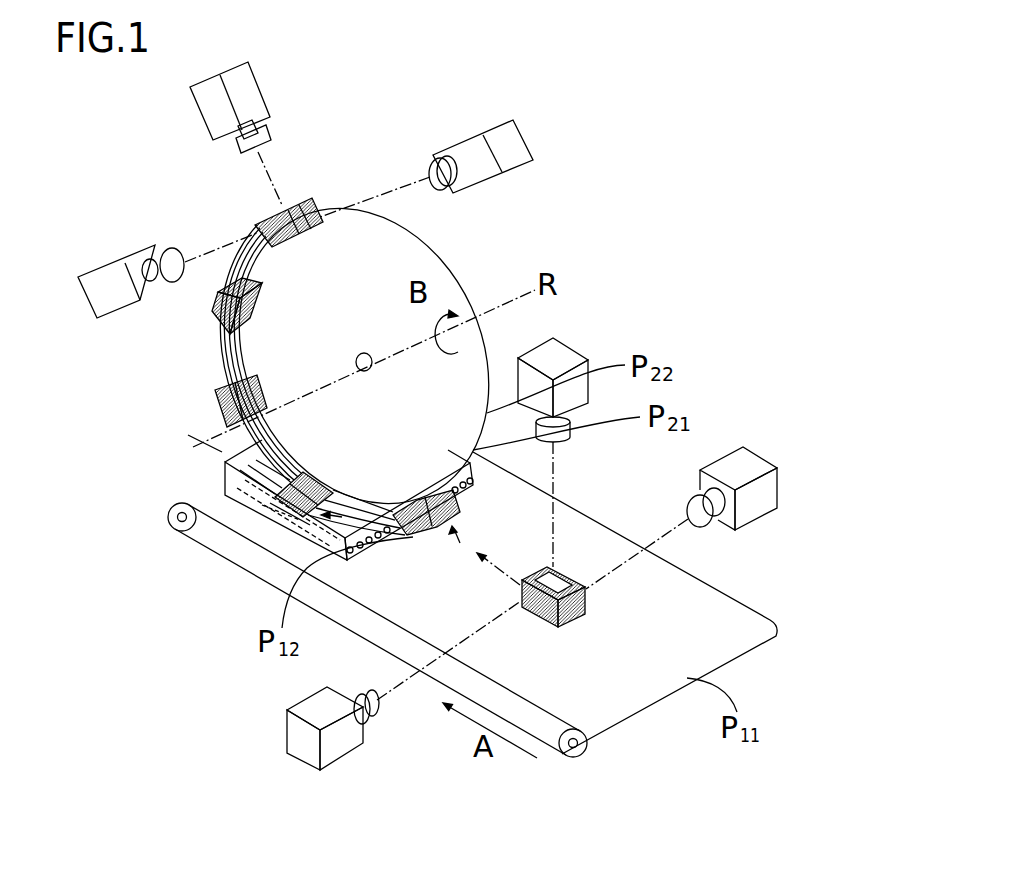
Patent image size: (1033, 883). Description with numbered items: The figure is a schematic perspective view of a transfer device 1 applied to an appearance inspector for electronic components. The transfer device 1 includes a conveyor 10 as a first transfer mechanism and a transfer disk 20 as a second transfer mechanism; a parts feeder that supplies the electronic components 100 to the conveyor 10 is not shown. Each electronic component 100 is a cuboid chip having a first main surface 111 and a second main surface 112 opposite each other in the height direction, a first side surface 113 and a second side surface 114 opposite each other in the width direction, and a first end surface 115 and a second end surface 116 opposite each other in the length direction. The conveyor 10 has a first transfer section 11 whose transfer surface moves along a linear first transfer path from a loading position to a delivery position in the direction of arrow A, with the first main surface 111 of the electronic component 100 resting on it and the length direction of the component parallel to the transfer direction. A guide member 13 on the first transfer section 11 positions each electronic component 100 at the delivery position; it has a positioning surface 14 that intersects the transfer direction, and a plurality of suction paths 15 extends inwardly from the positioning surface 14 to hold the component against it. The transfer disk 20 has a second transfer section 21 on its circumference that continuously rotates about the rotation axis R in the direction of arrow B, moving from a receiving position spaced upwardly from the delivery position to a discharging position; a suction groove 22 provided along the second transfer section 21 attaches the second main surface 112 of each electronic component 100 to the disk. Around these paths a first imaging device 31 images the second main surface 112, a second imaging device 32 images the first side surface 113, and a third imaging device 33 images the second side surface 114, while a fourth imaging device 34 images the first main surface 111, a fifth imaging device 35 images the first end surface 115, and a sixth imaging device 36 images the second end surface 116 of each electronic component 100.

The transfer device 1 is at (699, 212).
The conveyor 10 is at (777, 620).
The first transfer section 11 is at (730, 650).
The guide member 13 is at (228, 470).
The positioning surface 14 is at (270, 503).
The suction paths 15 is at (262, 505).
The transfer disk 20 is at (459, 269).
The second transfer section 21 is at (233, 345).
The suction groove 22 is at (230, 360).
The first imaging device 31 is at (563, 350).
The second imaging device 32 is at (300, 755).
The third imaging device 33 is at (748, 462).
The fourth imaging device 34 is at (210, 103).
The fifth imaging device 35 is at (482, 133).
The sixth imaging device 36 is at (112, 263).
The electronic component 100 is at (598, 597).
The first main surface 111 is at (288, 212).
The second main surface 112 is at (550, 568).
The first side surface 113 is at (525, 598).
The second side surface 114 is at (570, 575).
The first end surface 115 is at (320, 205).
The second end surface 116 is at (257, 228).